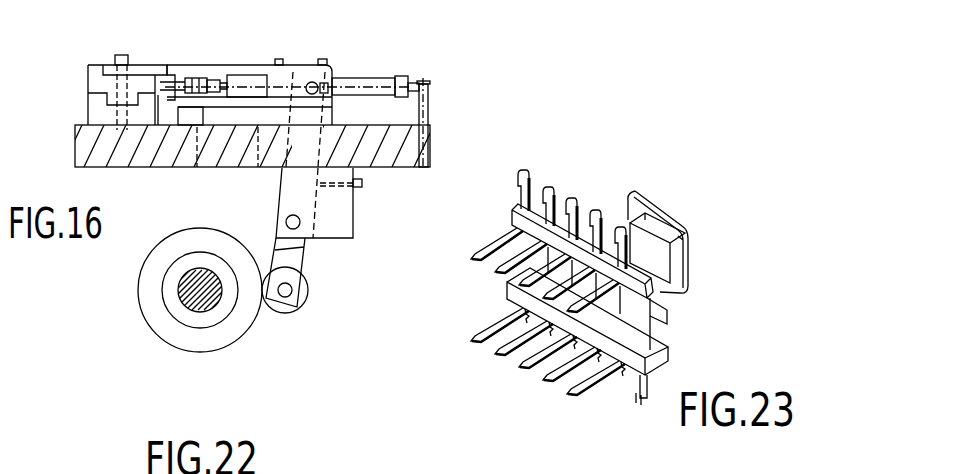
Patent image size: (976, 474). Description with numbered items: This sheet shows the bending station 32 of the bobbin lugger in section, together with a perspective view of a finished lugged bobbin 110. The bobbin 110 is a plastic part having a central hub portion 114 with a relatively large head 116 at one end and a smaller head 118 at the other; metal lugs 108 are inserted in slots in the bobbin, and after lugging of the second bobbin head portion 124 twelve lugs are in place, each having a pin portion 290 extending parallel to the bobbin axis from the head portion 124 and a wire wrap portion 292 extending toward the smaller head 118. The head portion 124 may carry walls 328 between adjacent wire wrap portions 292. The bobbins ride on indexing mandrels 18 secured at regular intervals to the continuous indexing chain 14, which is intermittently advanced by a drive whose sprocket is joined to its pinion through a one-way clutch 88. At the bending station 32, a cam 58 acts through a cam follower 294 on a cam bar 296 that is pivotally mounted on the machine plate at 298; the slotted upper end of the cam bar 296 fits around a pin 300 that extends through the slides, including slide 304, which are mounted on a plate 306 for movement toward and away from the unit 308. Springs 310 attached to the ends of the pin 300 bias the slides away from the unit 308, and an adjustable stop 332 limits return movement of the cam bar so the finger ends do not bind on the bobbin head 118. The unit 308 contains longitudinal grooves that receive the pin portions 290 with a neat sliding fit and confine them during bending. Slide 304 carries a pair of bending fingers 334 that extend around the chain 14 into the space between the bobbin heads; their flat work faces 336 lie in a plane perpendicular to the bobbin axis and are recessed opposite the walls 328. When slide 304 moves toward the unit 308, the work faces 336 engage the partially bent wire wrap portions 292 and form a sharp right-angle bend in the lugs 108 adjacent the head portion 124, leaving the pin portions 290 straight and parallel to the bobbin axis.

In FIG. 16, the indexing chain 14 is at (229, 81).
In FIG. 16, the bobbin indexing mandrel 18 is at (197, 79).
In FIG. 16, the bending station 32 is at (123, 44).
In FIG. 16, the cam 58 is at (183, 342).
In FIG. 16, the one-way clutch 88 is at (210, 308).
In FIG. 23, the metal lug 108 is at (498, 278).
In FIG. 23, the plastic bobbin 110 is at (653, 206).
In FIG. 23, the central hub portion 114 is at (631, 236).
In FIG. 23, the large head 116 is at (672, 323).
In FIG. 23, the smaller head 118 is at (680, 220).
In FIG. 23, the bobbin head portion 124 is at (658, 330).
In FIG. 23, the pin portion 290 is at (566, 392).
In FIG. 23, the wire wrap portion 292 is at (548, 178).
In FIG. 16, the cam follower 294 is at (308, 293).
In FIG. 16, the cam bar 296 is at (300, 263).
In FIG. 16, the pivot 298 is at (300, 221).
In FIG. 16, the pin 300 is at (318, 84).
In FIG. 16, the slide 304 is at (292, 66).
In FIG. 16, the plate 306 is at (421, 119).
In FIG. 16, the unit 308 is at (88, 78).
In FIG. 16, the spring 310 is at (388, 78).
In FIG. 23, the wall 328 is at (580, 196).
In FIG. 16, the adjustable stop 332 is at (363, 185).
In FIG. 16, the bending finger 334 is at (245, 97).
In FIG. 16, the work face 336 is at (172, 76).